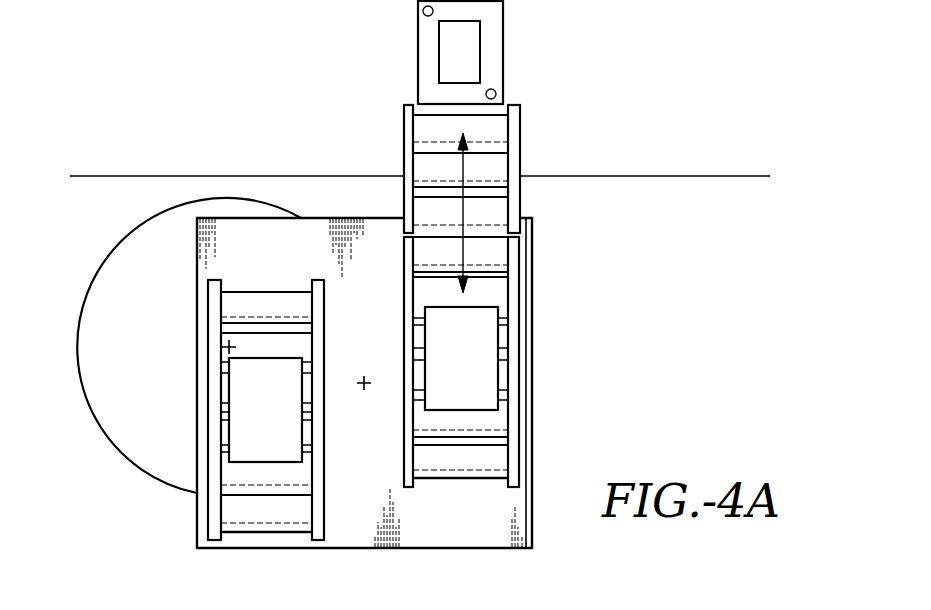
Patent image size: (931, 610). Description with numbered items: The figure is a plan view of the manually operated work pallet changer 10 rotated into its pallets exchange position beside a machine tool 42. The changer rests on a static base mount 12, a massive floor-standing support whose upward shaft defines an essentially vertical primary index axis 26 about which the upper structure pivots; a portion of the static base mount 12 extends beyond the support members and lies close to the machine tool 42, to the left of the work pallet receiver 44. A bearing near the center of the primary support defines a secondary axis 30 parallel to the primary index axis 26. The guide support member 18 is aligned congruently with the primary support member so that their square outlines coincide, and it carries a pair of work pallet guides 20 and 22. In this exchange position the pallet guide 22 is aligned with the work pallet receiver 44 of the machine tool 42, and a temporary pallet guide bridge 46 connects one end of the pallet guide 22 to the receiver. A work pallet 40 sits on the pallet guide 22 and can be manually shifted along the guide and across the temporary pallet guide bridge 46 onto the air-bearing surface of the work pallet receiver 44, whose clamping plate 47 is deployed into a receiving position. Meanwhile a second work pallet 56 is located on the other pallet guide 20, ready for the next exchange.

The manually operated work pallet changer 10 is at (126, 533).
The static base mount 12 is at (103, 392).
The guide support member 18 is at (500, 526).
The work pallet guide 20 is at (210, 515).
The work pallet guide 22 is at (518, 440).
The primary index axis 26 is at (224, 347).
The secondary axis 30 is at (364, 390).
The work pallet 40 is at (470, 366).
The machine tool 42 is at (657, 151).
The work pallet receiver 44 is at (503, 56).
The temporary pallet guide bridge 46 is at (520, 200).
The clamping plate 47 is at (439, 53).
The second work pallet 56 is at (248, 427).